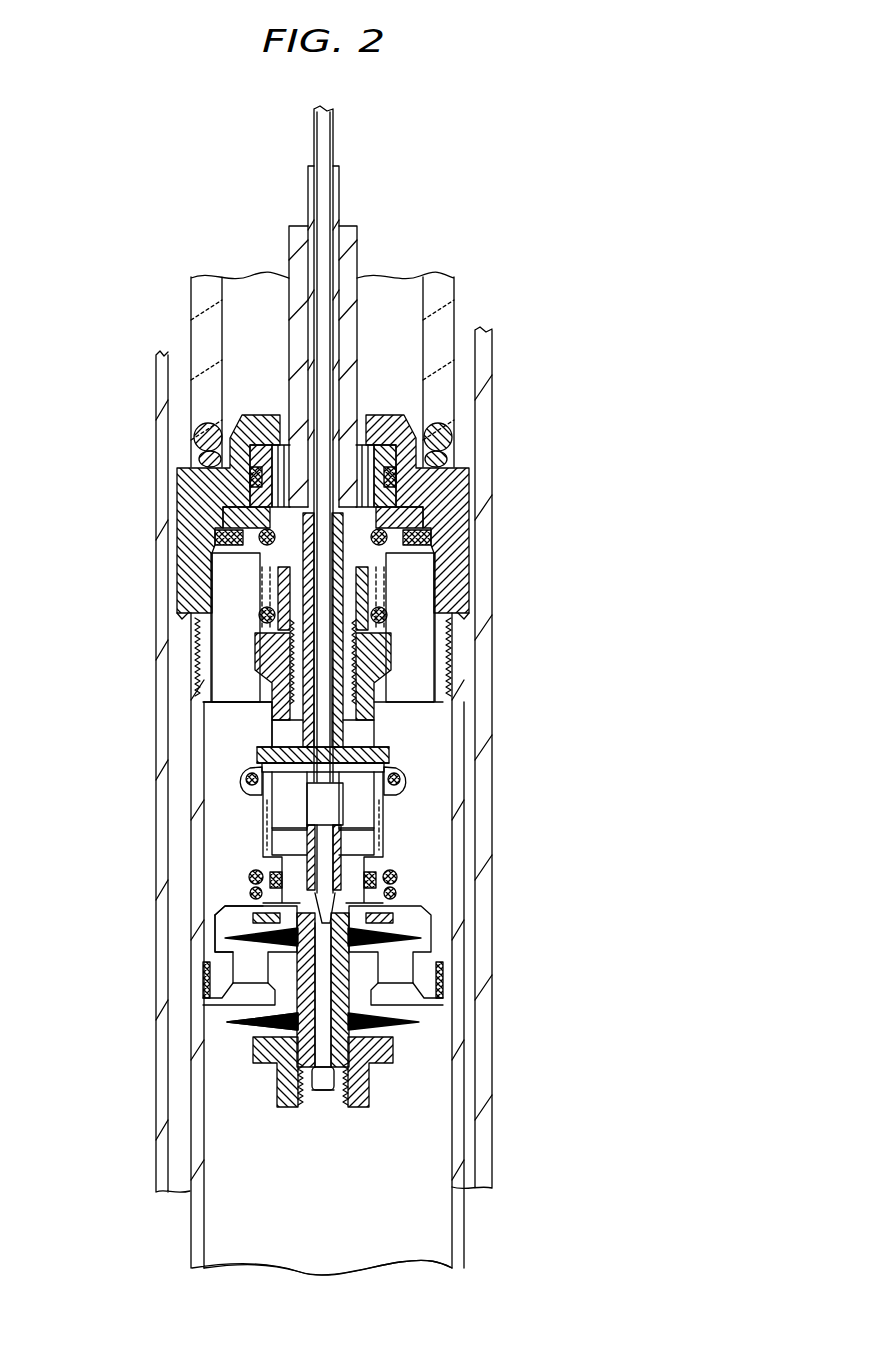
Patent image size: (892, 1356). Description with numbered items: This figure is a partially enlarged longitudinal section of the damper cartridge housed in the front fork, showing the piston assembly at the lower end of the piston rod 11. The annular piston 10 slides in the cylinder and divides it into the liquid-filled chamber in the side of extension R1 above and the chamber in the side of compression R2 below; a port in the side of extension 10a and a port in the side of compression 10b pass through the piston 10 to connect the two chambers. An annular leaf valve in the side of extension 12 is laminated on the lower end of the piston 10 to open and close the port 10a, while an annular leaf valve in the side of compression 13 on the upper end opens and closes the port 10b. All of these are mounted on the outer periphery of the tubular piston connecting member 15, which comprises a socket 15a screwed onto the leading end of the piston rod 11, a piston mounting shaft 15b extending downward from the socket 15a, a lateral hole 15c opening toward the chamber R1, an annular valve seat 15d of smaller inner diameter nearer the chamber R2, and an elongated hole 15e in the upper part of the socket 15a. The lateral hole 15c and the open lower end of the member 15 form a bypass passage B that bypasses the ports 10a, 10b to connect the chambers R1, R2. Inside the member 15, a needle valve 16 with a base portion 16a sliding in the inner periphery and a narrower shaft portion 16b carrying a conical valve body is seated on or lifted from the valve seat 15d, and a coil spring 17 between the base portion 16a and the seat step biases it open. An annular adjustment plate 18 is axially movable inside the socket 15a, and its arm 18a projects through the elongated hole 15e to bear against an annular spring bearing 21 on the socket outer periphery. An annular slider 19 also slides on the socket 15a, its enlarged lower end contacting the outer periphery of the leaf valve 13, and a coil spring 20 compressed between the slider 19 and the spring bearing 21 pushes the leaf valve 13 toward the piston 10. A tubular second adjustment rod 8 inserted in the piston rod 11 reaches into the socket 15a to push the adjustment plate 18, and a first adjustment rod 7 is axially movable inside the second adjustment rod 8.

The first adjustment rod 7 is at (334, 140).
The second adjustment rod 8 is at (340, 205).
The piston 10 is at (456, 995).
The port in the side of extension 10a is at (440, 965).
The port in the side of compression 10b is at (215, 985).
The piston rod 11 is at (357, 242).
The leaf valve in the side of extension 12 is at (322, 1044).
The leaf valve in the side of compression 13 is at (395, 915).
The piston connecting member 15 is at (395, 657).
The socket 15a is at (382, 793).
The piston mounting shaft 15b is at (242, 1012).
The lateral hole 15c is at (378, 860).
The annular valve seat 15d is at (275, 858).
The elongated hole 15e is at (372, 740).
The needle valve 16 is at (300, 800).
The base portion 16a is at (306, 808).
The shaft portion 16b is at (345, 892).
The coil spring 17 is at (385, 835).
The adjustment plate 18 is at (398, 751).
The arm 18a is at (250, 771).
The slider 19 is at (222, 910).
The coil spring 20 is at (250, 880).
The spring bearing 21 is at (398, 774).
The bypass passage B is at (305, 1072).
The chamber in the side of extension R1 is at (223, 715).
The chamber in the side of compression R2 is at (390, 1220).